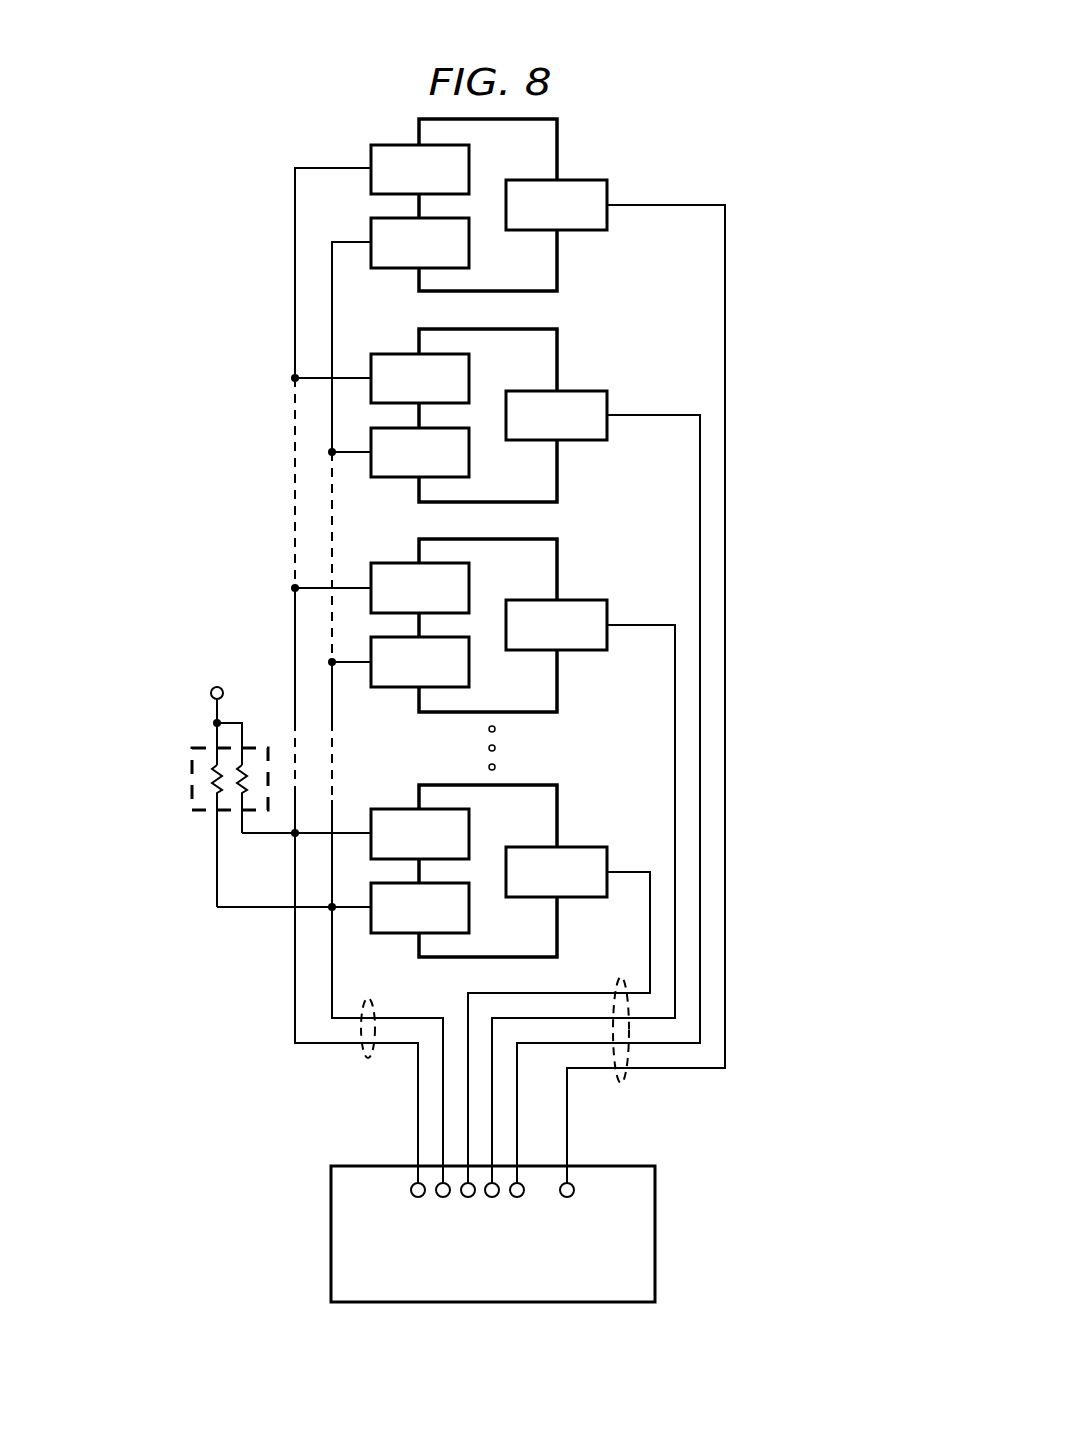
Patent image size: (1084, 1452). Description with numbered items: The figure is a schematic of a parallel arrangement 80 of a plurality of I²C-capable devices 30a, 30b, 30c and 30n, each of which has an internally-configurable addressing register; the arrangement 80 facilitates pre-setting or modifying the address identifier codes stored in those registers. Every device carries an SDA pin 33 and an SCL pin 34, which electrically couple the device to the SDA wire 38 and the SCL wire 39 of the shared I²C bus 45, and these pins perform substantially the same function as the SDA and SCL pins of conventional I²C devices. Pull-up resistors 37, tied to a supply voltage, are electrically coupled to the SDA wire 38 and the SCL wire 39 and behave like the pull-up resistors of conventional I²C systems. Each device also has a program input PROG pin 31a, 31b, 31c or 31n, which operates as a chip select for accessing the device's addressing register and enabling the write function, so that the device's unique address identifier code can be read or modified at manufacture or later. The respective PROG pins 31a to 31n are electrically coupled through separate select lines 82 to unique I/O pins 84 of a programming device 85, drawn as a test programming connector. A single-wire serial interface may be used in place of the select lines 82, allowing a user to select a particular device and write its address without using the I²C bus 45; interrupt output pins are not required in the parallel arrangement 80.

The parallel arrangement 80 is at (642, 54).
The I²C-capable device 30a is at (566, 263).
The I²C-capable device 30b is at (566, 473).
The I²C-capable device 30c is at (566, 568).
The I²C-capable device 30n is at (566, 811).
The PROG pin 31a is at (583, 180).
The PROG pin 31b is at (583, 391).
The PROG pin 31c is at (583, 651).
The PROG pin 31n is at (583, 897).
The SDA pin 33 is at (398, 270).
The SCL pin 34 is at (397, 145).
The pull-up resistors 37 is at (184, 783).
The SDA wire 38 is at (352, 242).
The SCL wire 39 is at (328, 168).
The I²C bus 45 is at (368, 1060).
The select lines 82 is at (621, 1085).
The I/O pins 84 is at (520, 1197).
The programming device 85 is at (323, 1241).